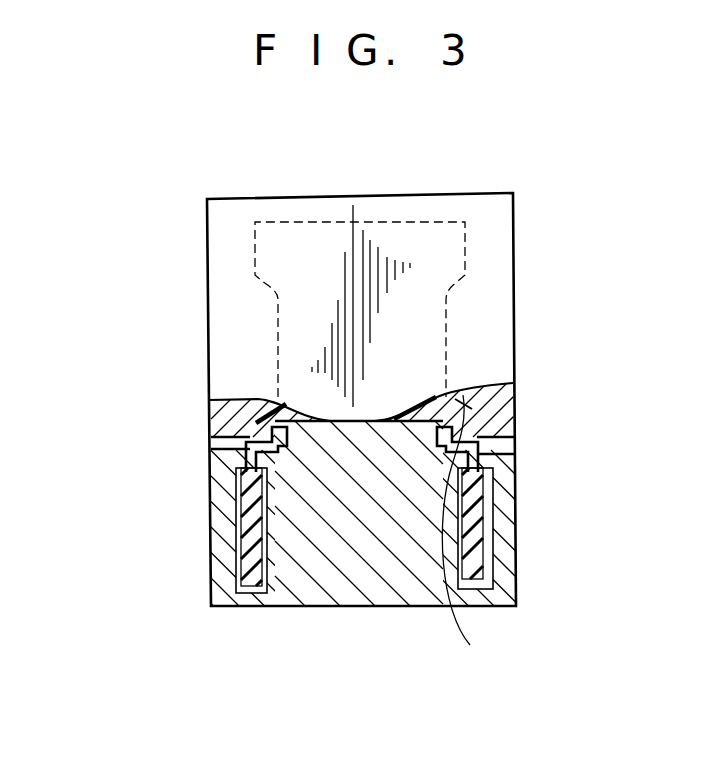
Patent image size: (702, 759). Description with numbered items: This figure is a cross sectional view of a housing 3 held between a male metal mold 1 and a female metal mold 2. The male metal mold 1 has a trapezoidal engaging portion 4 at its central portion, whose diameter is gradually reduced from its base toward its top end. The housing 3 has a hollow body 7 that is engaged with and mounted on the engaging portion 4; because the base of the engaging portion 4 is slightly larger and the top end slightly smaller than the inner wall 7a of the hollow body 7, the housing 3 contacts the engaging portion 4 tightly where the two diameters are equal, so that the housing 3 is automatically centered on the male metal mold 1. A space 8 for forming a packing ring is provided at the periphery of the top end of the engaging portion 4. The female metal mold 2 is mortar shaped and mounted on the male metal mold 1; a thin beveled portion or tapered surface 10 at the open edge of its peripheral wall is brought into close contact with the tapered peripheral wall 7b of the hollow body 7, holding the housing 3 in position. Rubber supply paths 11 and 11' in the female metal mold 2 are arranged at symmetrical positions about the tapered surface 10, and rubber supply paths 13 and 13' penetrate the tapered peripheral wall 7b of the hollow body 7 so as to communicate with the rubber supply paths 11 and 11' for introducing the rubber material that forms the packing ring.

The male metal mold 1 is at (348, 610).
The female metal mold 2 is at (418, 190).
The housing 3 is at (276, 356).
The engaging portion 4 is at (283, 504).
The hollow body 7 is at (241, 560).
The inner wall 7a is at (480, 533).
The tapered peripheral wall 7b is at (455, 400).
The space 8 is at (472, 411).
The beveled portion 10 is at (463, 406).
The rubber supply path 11 is at (540, 471).
The rubber supply path 11' is at (175, 438).
The rubber supply path 13 is at (529, 528).
The rubber supply path 13' is at (193, 374).